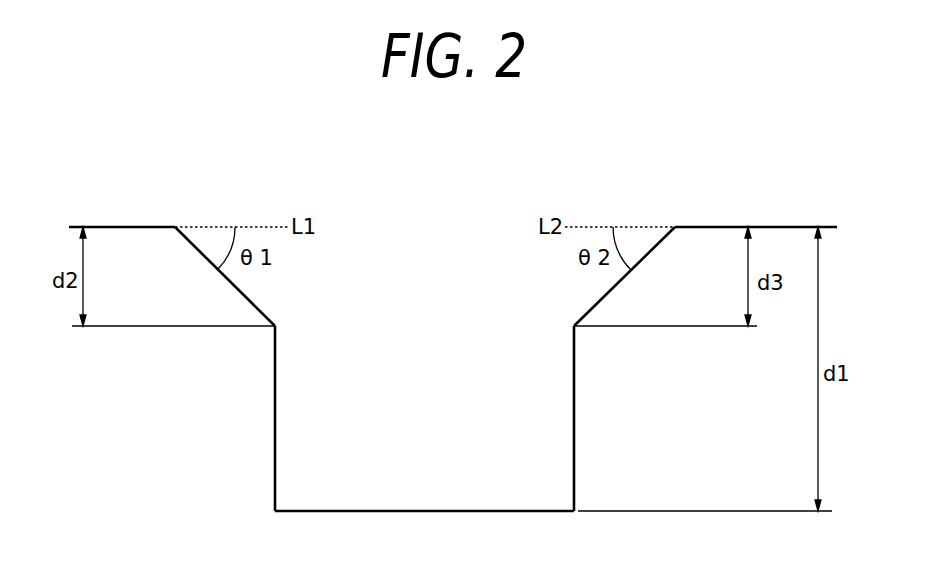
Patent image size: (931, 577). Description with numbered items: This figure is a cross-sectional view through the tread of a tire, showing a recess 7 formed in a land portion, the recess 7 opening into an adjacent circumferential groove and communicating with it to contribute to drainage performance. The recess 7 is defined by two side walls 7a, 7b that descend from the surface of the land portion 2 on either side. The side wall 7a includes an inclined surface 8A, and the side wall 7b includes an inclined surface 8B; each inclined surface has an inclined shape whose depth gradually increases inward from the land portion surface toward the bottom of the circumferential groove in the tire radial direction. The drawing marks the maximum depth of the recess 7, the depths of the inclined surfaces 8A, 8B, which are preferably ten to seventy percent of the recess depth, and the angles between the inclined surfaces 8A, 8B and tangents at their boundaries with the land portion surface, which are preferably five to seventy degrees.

The substrate top surface 2 is at (113, 227).
The recess 7 is at (425, 336).
The side wall 7a is at (275, 405).
The side wall 7b is at (574, 405).
The inclined surface 8A is at (240, 292).
The inclined surface 8B is at (600, 297).